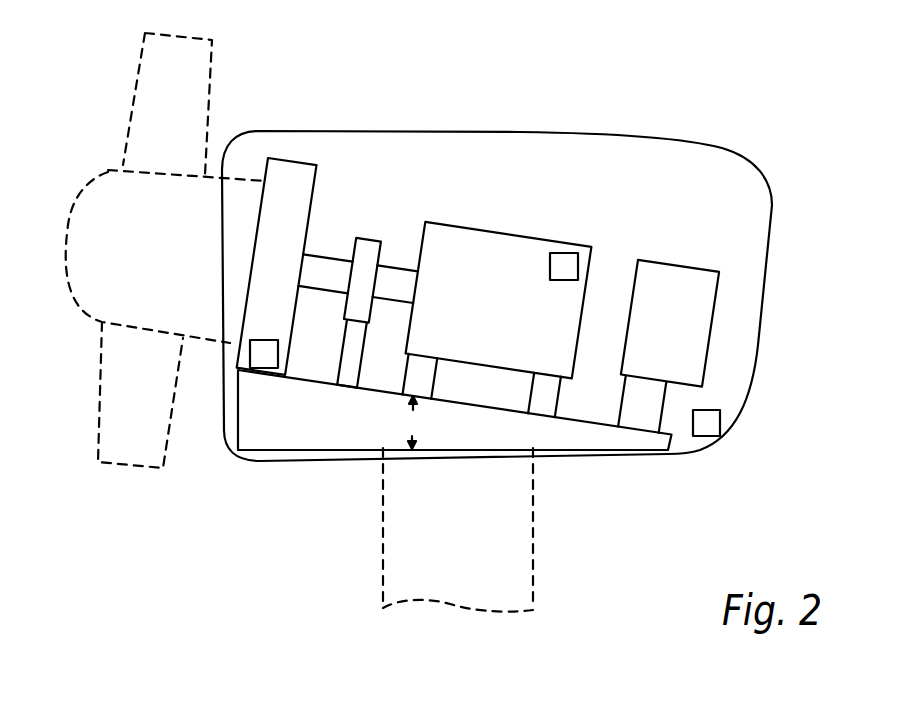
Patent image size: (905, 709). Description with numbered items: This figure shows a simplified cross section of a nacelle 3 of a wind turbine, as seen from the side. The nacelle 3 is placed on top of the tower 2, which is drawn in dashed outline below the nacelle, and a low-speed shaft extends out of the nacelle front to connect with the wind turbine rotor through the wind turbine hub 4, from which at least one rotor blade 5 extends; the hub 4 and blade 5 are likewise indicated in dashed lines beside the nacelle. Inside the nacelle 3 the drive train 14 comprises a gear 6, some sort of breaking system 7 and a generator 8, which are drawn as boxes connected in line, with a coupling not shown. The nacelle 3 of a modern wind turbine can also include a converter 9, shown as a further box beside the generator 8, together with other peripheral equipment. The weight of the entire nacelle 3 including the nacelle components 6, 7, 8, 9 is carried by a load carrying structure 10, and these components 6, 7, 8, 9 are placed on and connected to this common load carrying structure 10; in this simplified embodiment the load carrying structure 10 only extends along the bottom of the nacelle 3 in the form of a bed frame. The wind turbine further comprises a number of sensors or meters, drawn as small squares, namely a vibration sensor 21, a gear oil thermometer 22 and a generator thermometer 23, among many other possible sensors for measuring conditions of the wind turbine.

The tower 2 is at (478, 563).
The nacelle 3 is at (793, 160).
The wind turbine hub 4 is at (107, 218).
The rotor blade 5 is at (185, 100).
The gear 6 is at (288, 185).
The breaking system 7 is at (368, 253).
The generator 8 is at (473, 263).
The converter 9 is at (683, 300).
The load carrying structure 10 is at (638, 438).
The drive train 14 is at (385, 288).
The vibration sensor 21 is at (718, 418).
The gear oil thermometer 22 is at (267, 370).
The generator thermometer 23 is at (580, 246).